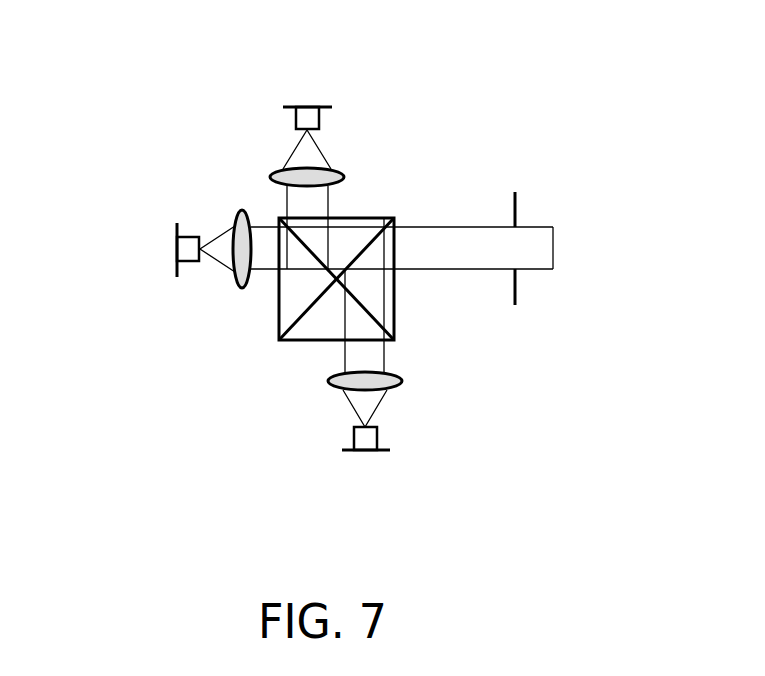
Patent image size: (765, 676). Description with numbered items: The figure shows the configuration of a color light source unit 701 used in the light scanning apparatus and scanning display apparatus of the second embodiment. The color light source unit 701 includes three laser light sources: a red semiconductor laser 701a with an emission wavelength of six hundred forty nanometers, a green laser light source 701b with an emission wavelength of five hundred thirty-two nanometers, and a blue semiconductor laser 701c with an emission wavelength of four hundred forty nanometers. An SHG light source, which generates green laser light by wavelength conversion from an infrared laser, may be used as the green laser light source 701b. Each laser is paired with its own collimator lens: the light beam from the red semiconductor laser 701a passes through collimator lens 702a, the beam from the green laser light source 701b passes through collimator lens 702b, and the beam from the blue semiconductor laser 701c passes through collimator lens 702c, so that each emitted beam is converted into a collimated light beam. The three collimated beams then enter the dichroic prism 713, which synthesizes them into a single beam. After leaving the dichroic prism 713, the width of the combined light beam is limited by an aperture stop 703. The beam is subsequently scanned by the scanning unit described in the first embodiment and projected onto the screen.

The color light source unit 701 is at (146, 123).
The red semiconductor laser 701a is at (316, 97).
The green laser light source 701b is at (168, 273).
The blue semiconductor laser 701c is at (367, 462).
The collimator lens 702a is at (270, 162).
The collimator lens 702b is at (237, 298).
The collimator lens 702c is at (328, 400).
The dichroic prism 713 is at (372, 203).
The aperture stop 703 is at (515, 185).